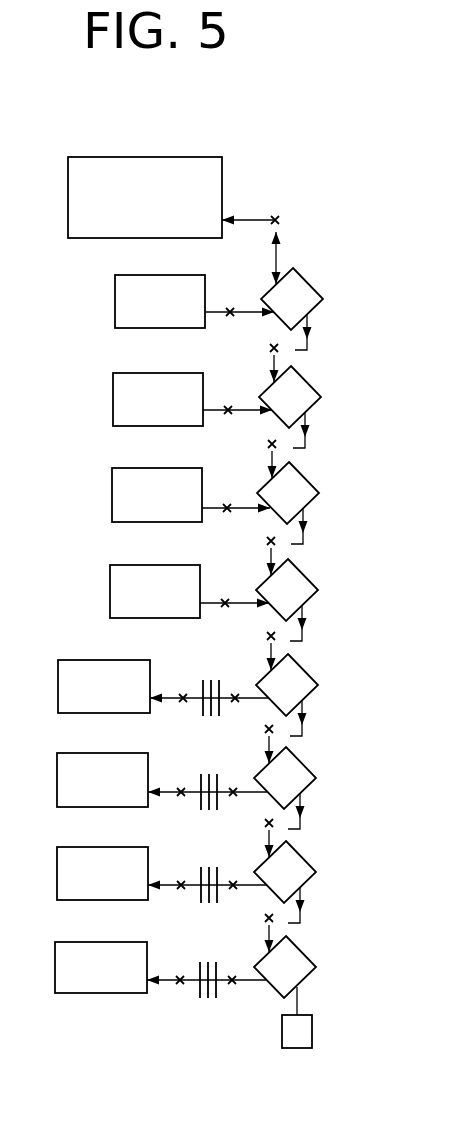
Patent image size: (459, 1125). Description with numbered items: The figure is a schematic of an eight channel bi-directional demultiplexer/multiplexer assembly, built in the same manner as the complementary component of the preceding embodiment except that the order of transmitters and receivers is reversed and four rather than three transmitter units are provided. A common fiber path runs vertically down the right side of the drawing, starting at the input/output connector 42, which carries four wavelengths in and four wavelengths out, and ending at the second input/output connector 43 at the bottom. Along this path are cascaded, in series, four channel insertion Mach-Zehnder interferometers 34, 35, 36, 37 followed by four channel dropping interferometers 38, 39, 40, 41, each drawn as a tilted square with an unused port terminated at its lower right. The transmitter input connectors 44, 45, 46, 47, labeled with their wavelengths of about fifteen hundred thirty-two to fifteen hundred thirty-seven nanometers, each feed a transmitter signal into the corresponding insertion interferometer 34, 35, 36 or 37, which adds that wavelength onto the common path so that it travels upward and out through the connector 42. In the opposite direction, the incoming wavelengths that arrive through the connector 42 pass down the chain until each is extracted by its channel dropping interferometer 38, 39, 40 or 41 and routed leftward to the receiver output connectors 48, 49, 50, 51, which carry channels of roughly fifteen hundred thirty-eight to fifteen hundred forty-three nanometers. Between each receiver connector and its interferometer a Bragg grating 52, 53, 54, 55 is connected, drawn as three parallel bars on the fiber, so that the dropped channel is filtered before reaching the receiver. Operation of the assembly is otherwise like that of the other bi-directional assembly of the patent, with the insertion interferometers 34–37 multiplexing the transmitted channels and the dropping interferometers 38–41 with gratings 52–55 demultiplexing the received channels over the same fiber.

The channel insertion Mach-Zehnder interferometer 34 is at (300, 305).
The channel insertion Mach-Zehnder interferometer 35 is at (298, 403).
The channel insertion Mach-Zehnder interferometer 36 is at (296, 499).
The channel insertion Mach-Zehnder interferometer 37 is at (295, 596).
The channel dropping interferometer 38 is at (295, 691).
The channel dropping interferometer 39 is at (293, 784).
The channel dropping interferometer 40 is at (293, 878).
The channel dropping interferometer 41 is at (293, 973).
The input/output connector 42 is at (158, 157).
The input/output connector 43 is at (300, 1028).
The transmitter input connector 44 is at (115, 299).
The transmitter input connector 45 is at (113, 397).
The transmitter input connector 46 is at (112, 495).
The transmitter input connector 47 is at (110, 590).
The receiver output connector 48 is at (60, 685).
The receiver output connector 49 is at (59, 779).
The receiver output connector 50 is at (59, 872).
The receiver output connector 51 is at (57, 967).
The Bragg grating 52 is at (203, 678).
The Bragg grating 53 is at (201, 772).
The Bragg grating 54 is at (201, 865).
The Bragg grating 55 is at (200, 960).